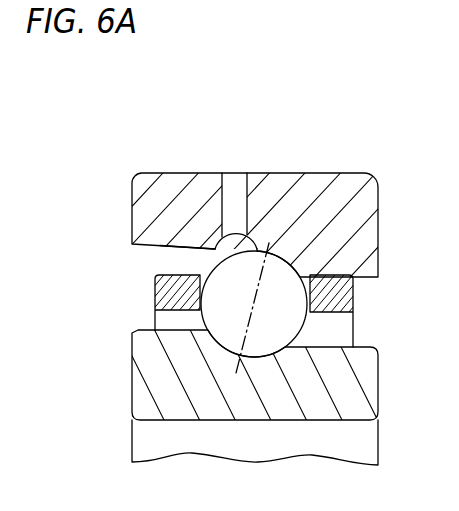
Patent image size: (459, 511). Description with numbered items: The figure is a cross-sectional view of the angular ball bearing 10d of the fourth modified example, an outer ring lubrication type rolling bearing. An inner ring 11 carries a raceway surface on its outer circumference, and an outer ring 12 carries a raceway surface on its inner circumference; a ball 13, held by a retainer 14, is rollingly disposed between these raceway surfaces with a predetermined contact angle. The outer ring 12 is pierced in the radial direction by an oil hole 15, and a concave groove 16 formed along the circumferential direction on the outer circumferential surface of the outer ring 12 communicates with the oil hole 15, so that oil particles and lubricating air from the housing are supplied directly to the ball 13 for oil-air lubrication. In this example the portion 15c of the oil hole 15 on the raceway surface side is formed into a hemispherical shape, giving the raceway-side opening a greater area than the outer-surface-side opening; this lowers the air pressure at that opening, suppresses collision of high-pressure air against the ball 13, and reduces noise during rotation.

The angular ball bearing 10d is at (310, 148).
The inner ring 11 is at (362, 380).
The outer ring 12 is at (365, 228).
The ball 13 is at (288, 322).
The retainer 14 is at (172, 283).
The oil hole 15 is at (229, 216).
The portion on the raceway surface side 15c is at (222, 249).
The concave groove 16 is at (246, 174).